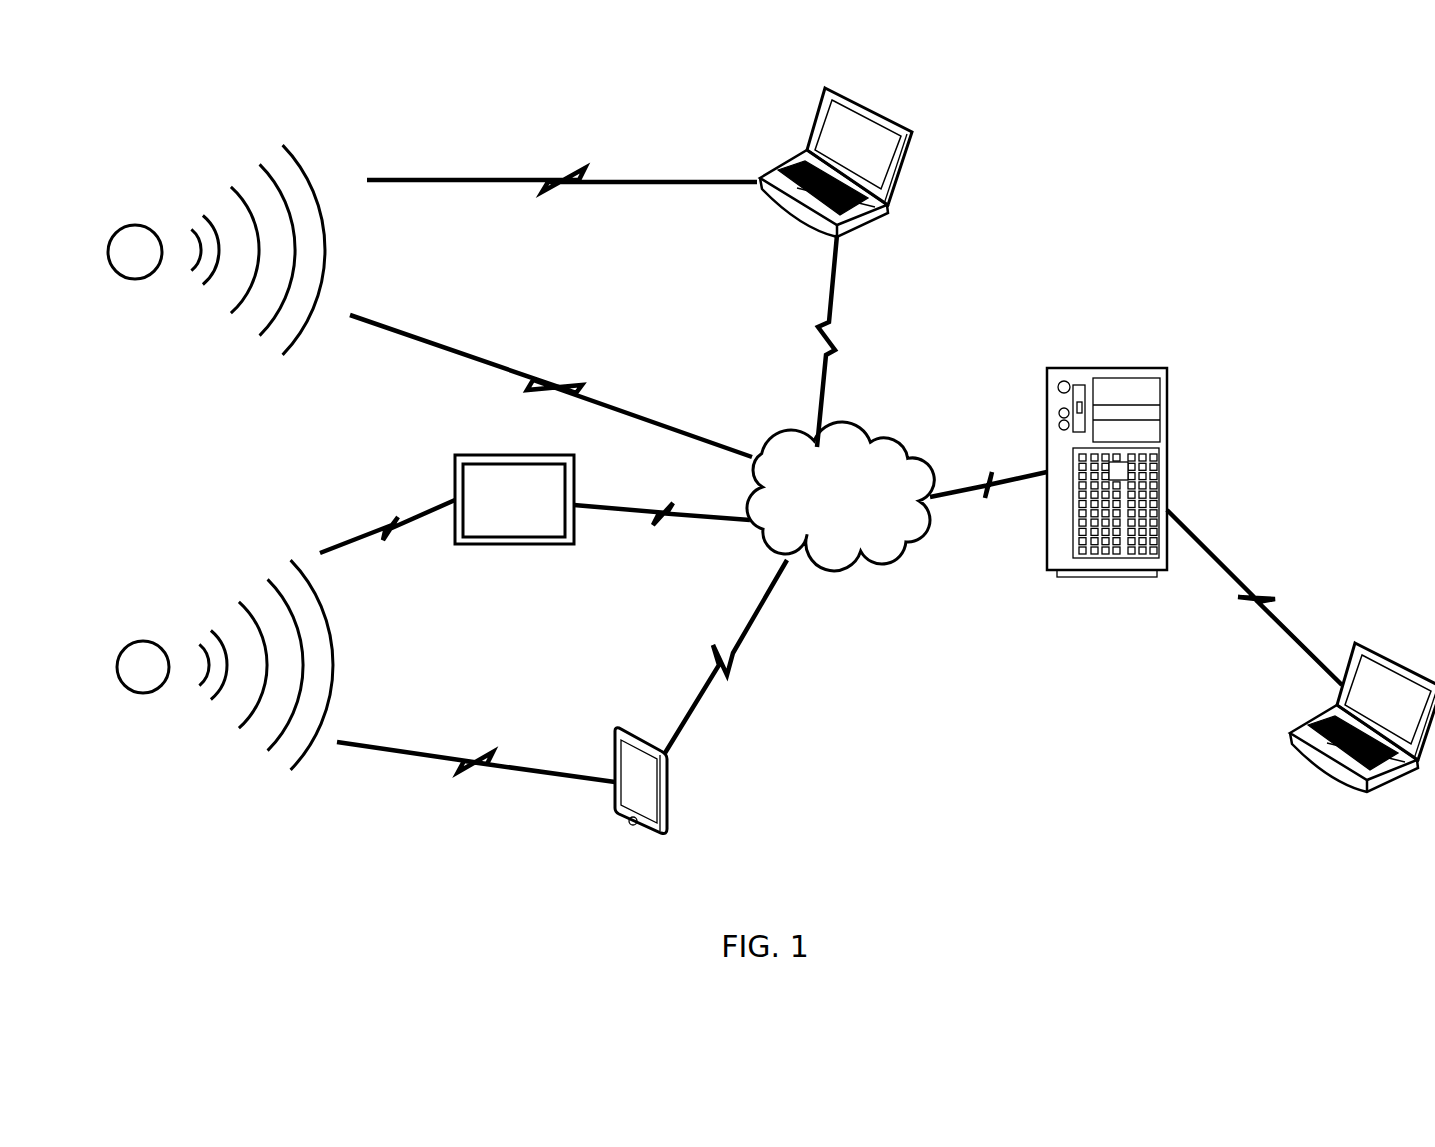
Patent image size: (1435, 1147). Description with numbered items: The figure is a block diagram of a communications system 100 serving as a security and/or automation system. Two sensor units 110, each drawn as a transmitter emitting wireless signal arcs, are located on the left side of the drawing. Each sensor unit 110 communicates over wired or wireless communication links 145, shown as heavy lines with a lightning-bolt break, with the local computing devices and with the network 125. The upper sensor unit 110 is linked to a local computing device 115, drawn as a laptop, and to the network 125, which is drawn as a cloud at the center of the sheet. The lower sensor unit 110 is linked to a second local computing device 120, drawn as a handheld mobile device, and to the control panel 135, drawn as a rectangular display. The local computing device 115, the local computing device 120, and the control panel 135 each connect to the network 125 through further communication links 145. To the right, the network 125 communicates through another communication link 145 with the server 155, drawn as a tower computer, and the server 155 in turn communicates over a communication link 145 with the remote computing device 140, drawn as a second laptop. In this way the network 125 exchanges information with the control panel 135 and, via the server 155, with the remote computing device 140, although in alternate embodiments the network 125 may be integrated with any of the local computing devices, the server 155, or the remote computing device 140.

The communications system 100 is at (143, 893).
The sensor unit 110 is at (135, 279).
The local computing device 115 is at (799, 224).
The local computing device 120 is at (630, 826).
The network 125 is at (866, 431).
The control panel 135 is at (518, 545).
The remote computing device 140 is at (1327, 773).
The communication link 145 is at (492, 171).
The server 155 is at (1130, 368).